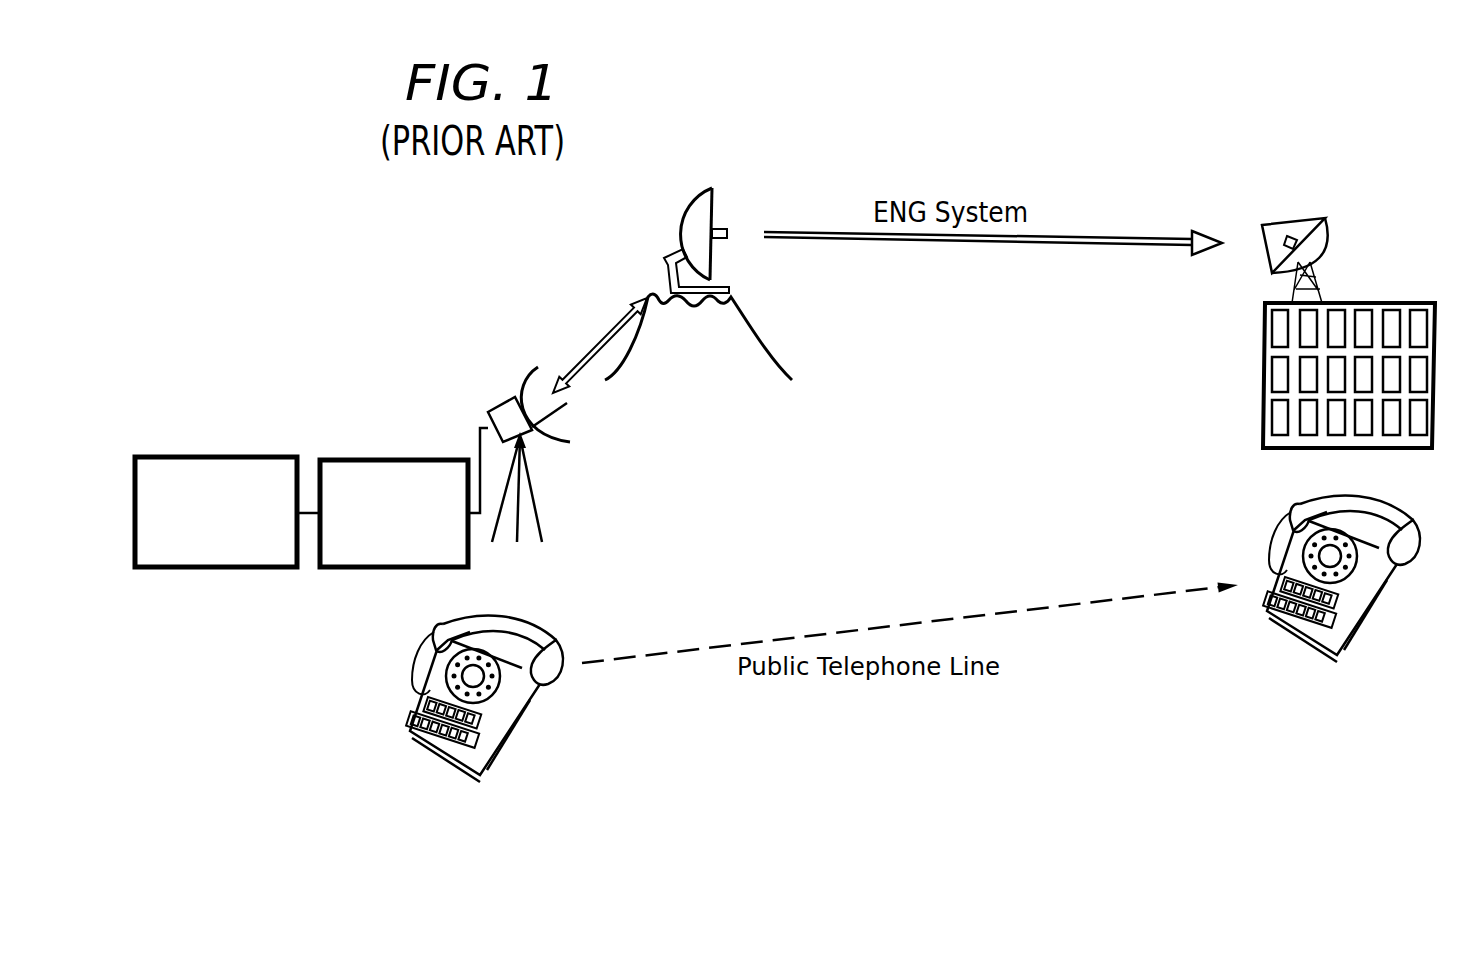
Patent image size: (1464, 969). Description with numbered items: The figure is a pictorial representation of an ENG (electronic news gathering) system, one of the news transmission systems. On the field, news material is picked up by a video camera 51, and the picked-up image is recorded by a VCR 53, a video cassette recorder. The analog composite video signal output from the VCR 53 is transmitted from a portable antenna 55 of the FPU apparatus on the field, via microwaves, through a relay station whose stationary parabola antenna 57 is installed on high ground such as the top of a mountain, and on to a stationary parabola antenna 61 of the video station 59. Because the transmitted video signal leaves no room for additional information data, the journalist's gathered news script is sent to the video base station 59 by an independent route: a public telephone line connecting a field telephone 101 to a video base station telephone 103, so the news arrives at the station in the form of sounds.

The video camera 51 is at (218, 456).
The VCR 53 is at (383, 457).
The portable antenna 55 is at (542, 443).
The stationary parabola antenna 57 is at (718, 263).
The video station 59 is at (1435, 420).
The stationary parabola antenna 61 is at (1323, 258).
The field telephone 101 is at (515, 738).
The video base station telephone 103 is at (1372, 618).